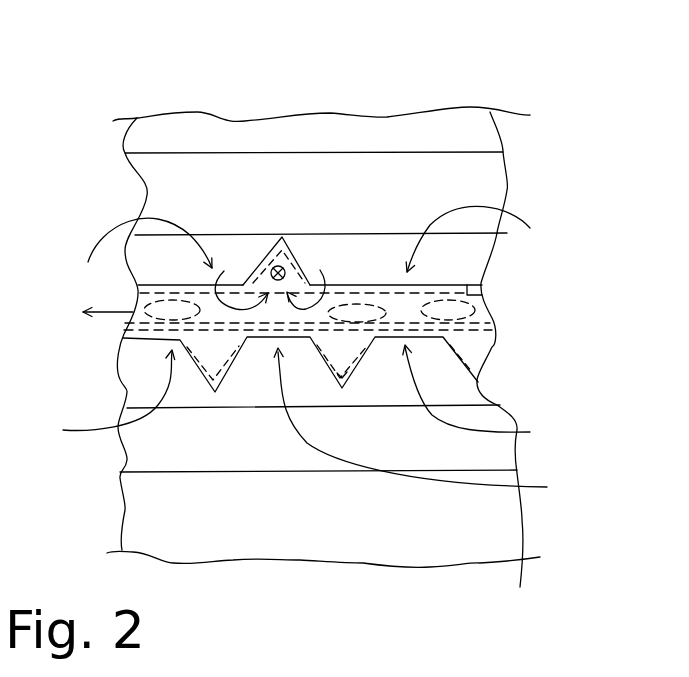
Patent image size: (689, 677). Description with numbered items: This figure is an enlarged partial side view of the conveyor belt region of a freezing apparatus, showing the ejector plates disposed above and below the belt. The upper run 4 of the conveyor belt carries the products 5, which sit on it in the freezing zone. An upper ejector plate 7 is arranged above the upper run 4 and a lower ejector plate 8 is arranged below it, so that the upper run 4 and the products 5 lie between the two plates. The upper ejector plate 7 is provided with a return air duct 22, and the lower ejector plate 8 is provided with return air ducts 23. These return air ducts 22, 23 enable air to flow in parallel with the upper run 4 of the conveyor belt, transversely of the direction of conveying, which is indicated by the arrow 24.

The upper run 4 is at (478, 345).
The products 5 is at (353, 313).
The upper ejector plate 7 is at (473, 284).
The lower ejector plate 8 is at (485, 378).
The return air duct 22 is at (278, 264).
The return air ducts 23 is at (203, 375).
The arrow indicating direction of conveying 24 is at (112, 312).